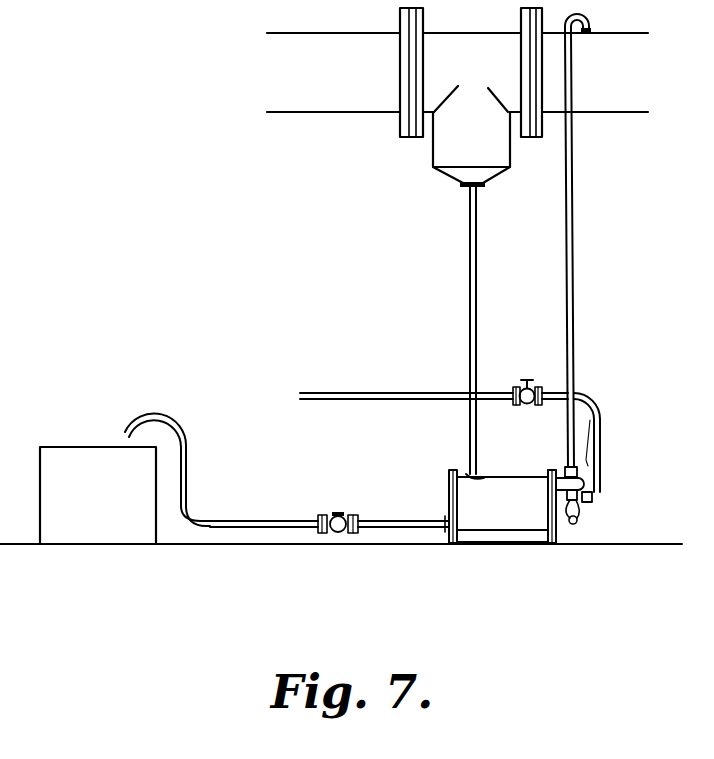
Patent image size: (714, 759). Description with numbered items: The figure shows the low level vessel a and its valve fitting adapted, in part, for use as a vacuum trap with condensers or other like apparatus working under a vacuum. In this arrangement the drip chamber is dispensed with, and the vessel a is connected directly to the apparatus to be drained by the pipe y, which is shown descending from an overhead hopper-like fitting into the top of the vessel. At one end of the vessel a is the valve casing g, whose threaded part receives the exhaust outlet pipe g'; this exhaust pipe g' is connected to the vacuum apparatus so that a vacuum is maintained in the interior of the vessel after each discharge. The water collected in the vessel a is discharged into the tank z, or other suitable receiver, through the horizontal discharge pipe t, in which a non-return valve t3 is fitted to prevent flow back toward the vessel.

The pipe y is at (464, 264).
The exhaust outlet pipe g' is at (593, 240).
The valve casing g is at (607, 431).
The low level vessel a is at (520, 505).
The tank z is at (98, 495).
The pipe t is at (413, 519).
The cock / valve t3 is at (331, 512).